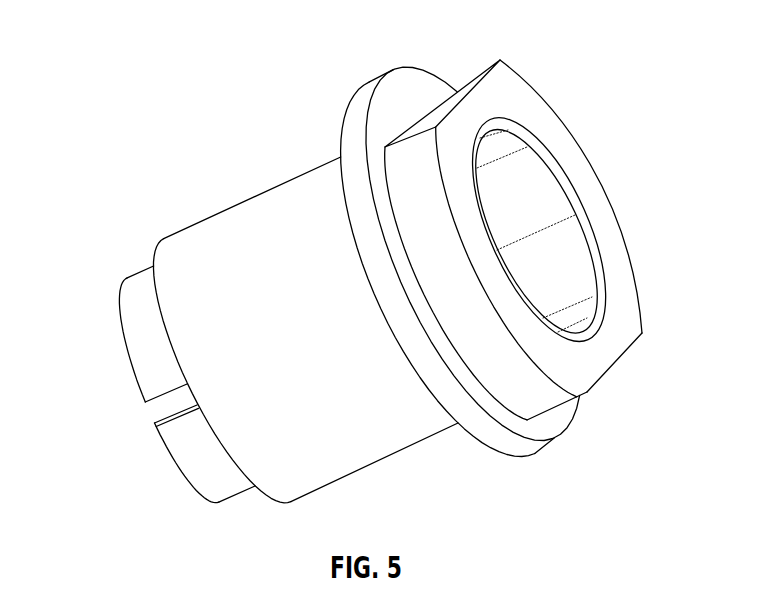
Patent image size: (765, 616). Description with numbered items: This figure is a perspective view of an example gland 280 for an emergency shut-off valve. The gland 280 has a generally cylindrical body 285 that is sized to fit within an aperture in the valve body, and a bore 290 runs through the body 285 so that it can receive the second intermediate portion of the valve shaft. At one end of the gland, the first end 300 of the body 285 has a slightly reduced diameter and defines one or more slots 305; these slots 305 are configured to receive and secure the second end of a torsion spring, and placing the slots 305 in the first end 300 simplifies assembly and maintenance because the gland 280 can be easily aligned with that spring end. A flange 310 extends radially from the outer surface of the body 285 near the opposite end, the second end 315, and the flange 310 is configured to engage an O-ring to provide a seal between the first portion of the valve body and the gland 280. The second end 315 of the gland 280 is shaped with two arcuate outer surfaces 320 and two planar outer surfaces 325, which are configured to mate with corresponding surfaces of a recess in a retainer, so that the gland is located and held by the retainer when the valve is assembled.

The gland 280 is at (239, 139).
The body 285 is at (183, 238).
The bore 290 is at (570, 264).
The first end 300 is at (134, 268).
The slots 305 is at (174, 403).
The flange 310 is at (366, 90).
The second end 315 is at (503, 51).
The arcuate outer surfaces 320 is at (543, 150).
The planar outer surfaces 325 is at (477, 77).